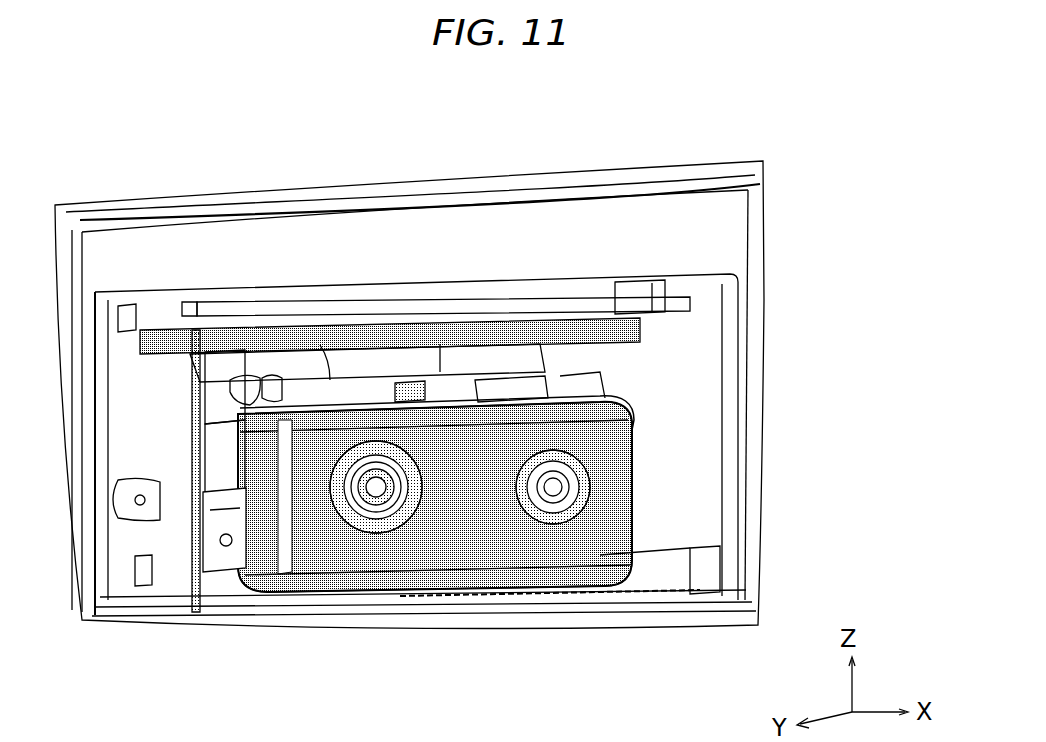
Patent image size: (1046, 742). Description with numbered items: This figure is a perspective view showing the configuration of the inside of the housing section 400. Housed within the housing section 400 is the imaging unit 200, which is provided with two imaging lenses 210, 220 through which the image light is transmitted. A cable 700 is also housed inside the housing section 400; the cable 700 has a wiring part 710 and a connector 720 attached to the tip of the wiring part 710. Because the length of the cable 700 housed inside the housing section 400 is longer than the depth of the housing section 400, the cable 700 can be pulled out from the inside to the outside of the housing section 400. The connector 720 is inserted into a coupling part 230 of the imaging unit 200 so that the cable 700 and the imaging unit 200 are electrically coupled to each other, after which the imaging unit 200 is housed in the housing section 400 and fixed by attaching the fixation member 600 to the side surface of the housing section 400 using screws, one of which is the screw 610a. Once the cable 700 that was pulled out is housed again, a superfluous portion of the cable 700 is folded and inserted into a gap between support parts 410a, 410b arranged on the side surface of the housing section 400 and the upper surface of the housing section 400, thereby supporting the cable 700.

The imaging unit 200 is at (436, 544).
The imaging lens 210 is at (552, 496).
The imaging lens 220 is at (385, 502).
The coupling part 230 is at (235, 570).
The housing section 400 is at (673, 515).
The support part 410a is at (465, 360).
The support part 410b is at (290, 356).
The fixation member 600 is at (628, 404).
The screw 610a is at (520, 374).
The cable 700 is at (390, 272).
The wiring part 710 is at (258, 347).
The connector 720 is at (232, 490).